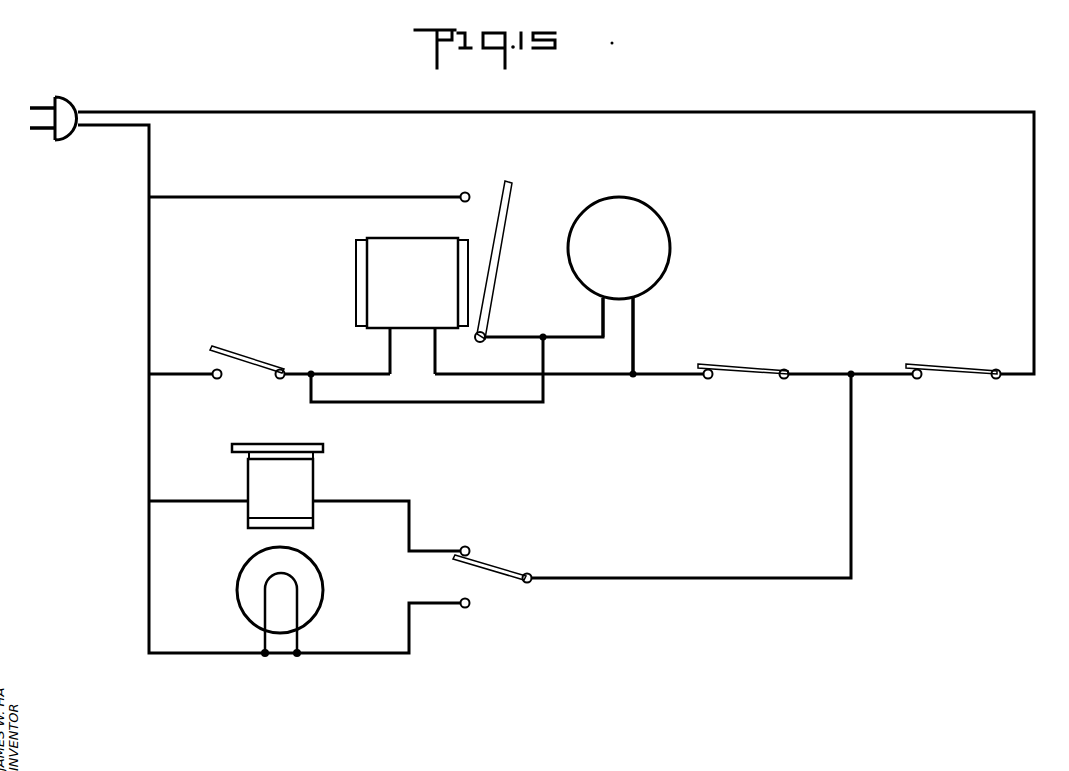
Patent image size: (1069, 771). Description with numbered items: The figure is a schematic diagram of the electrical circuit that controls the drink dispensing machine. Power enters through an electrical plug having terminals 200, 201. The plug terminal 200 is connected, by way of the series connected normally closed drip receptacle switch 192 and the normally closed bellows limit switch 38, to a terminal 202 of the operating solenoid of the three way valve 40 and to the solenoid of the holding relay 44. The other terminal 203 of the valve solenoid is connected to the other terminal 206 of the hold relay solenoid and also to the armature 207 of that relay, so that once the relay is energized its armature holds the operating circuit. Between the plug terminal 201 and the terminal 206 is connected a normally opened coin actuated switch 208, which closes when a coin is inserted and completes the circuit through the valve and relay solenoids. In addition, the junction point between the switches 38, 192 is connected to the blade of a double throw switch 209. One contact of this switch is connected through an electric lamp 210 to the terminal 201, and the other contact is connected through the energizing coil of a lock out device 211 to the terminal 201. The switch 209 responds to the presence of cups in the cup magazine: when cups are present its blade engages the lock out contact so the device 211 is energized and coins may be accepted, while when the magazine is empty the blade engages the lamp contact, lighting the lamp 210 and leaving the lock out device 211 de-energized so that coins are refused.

The plug terminal 200 is at (42, 106).
The plug terminal 201 is at (42, 134).
The hold relay solenoid terminal 206 is at (487, 170).
The armature 207 is at (492, 289).
The holding relay 44 is at (425, 218).
The three way valve 40 is at (668, 254).
The valve solenoid terminal 203 is at (600, 300).
The valve solenoid terminal 202 is at (636, 300).
The coin actuated switch 208 is at (263, 344).
The bellows limit switch 38 is at (752, 352).
The drip receptacle switch 192 is at (944, 357).
The lock out device 211 is at (251, 472).
The double throw switch 209 is at (492, 563).
The electric lamp 210 is at (323, 602).